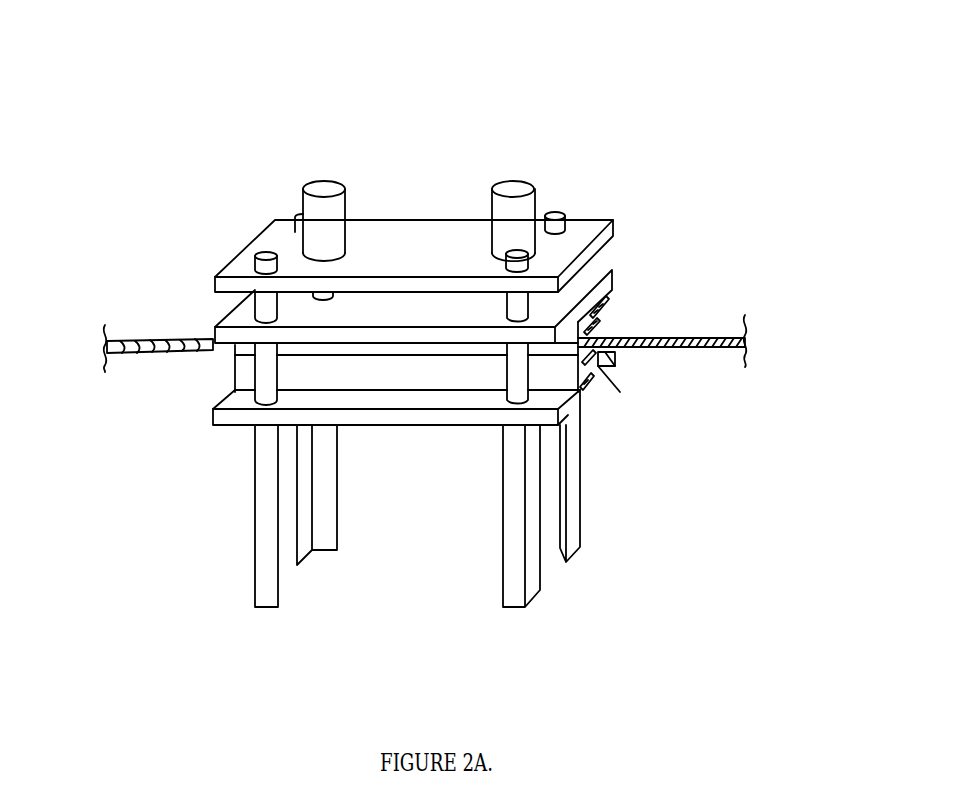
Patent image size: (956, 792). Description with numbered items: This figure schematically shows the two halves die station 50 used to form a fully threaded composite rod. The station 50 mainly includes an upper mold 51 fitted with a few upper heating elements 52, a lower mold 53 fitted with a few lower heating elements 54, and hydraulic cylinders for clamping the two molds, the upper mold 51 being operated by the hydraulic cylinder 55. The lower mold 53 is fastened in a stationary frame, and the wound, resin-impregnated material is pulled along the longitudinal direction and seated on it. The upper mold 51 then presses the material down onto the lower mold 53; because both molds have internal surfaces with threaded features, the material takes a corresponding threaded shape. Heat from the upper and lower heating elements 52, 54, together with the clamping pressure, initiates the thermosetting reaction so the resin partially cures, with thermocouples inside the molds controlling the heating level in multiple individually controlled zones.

The two halves die station 50 is at (464, 58).
The upper mold 51 is at (607, 298).
The upper heating elements 52 is at (600, 321).
The lower mold 53 is at (585, 390).
The lower heating elements 54 is at (600, 372).
The hydraulic cylinder 55 is at (521, 186).